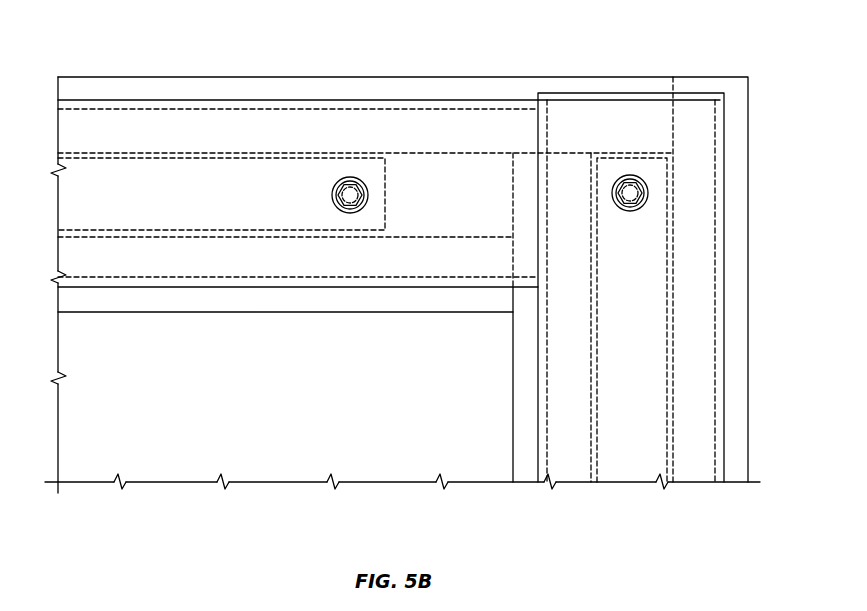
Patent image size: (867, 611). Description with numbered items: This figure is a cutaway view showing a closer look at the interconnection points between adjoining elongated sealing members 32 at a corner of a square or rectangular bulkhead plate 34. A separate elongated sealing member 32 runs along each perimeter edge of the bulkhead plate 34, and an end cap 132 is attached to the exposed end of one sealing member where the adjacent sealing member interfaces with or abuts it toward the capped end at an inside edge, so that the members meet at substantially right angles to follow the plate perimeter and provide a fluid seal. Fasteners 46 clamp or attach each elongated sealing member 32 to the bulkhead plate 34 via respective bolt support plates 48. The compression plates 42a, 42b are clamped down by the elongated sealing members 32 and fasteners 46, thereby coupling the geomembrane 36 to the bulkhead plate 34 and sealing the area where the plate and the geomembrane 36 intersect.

The elongated sealing member 32 is at (253, 130).
The bulkhead plate 34 is at (156, 285).
The geomembrane 36 is at (428, 253).
The compression plate 42a is at (472, 84).
The compression plate 42b is at (525, 353).
The fastener 46 is at (350, 190).
The bolt support plate 48 is at (112, 197).
The end cap 132 is at (612, 93).